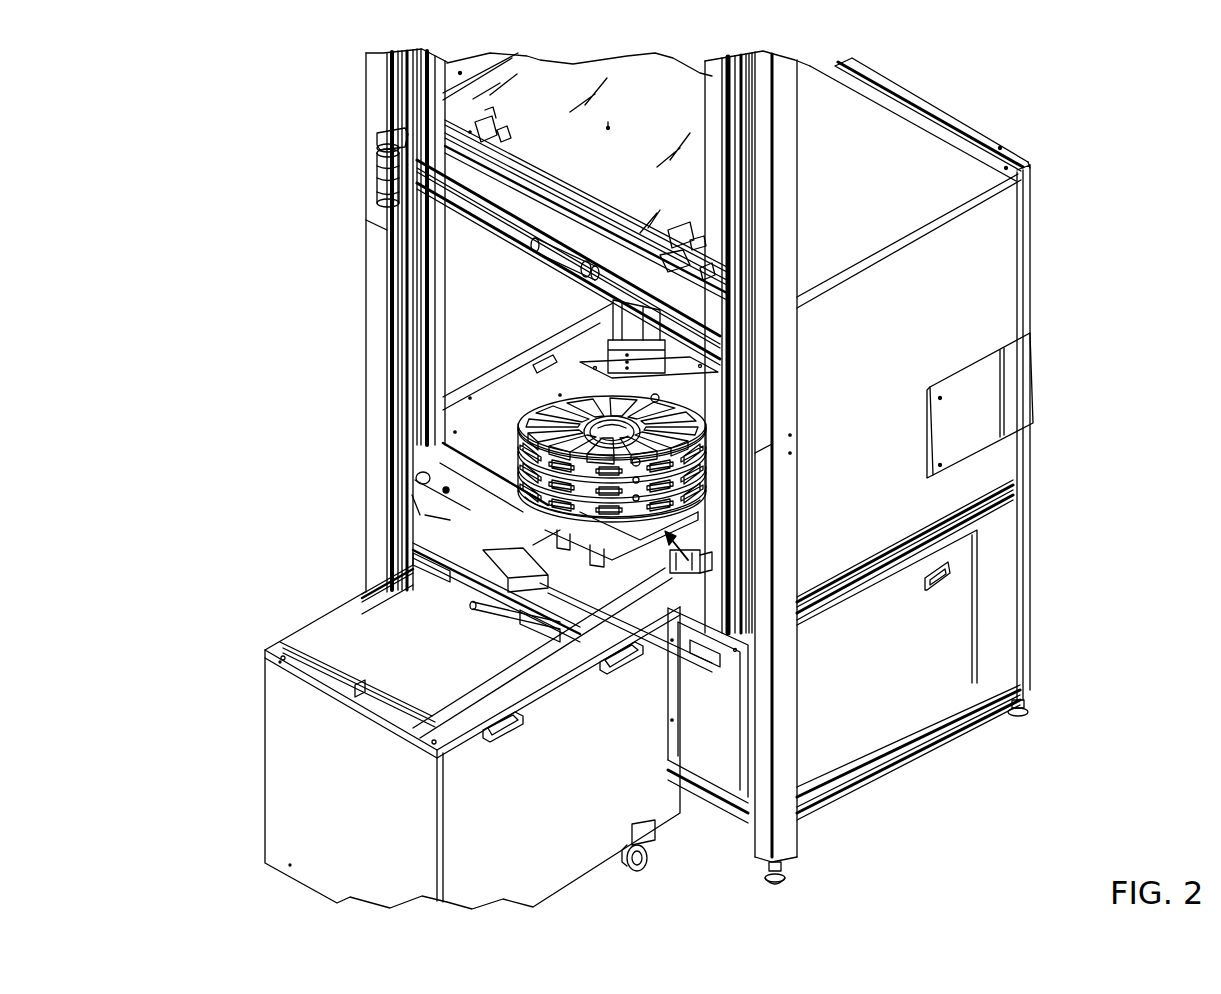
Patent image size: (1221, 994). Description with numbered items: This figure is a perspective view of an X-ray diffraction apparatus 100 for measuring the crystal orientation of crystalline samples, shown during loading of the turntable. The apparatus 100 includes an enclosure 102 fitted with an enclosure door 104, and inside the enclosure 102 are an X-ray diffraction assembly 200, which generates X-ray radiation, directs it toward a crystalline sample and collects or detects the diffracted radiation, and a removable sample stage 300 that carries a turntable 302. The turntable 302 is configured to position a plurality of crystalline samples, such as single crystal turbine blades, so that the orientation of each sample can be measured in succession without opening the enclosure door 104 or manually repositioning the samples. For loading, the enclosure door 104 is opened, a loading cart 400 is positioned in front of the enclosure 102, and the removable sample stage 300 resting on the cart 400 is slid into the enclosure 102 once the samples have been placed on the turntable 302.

The X-ray diffraction apparatus 100 is at (286, 101).
The enclosure 102 is at (478, 304).
The enclosure door 104 is at (653, 118).
The X-ray diffraction assembly 200 is at (600, 334).
The removable sample stage 300 is at (700, 524).
The turntable 302 is at (680, 572).
The loading cart 400 is at (560, 843).